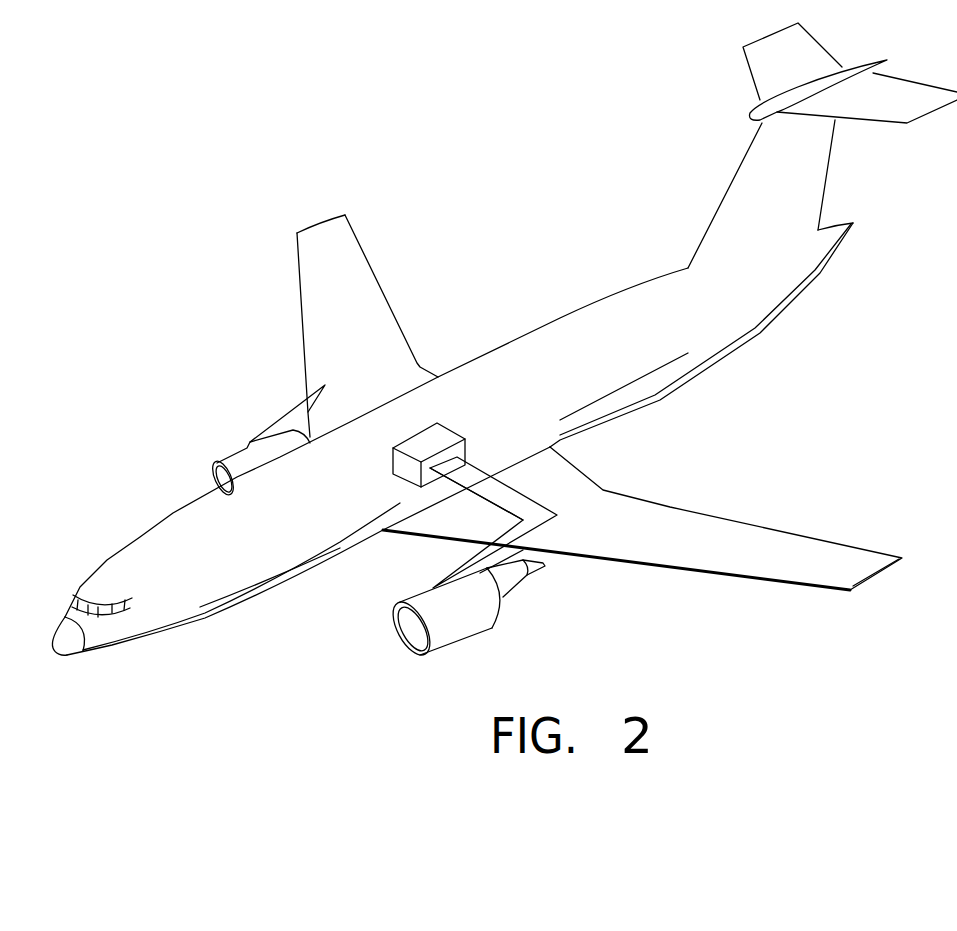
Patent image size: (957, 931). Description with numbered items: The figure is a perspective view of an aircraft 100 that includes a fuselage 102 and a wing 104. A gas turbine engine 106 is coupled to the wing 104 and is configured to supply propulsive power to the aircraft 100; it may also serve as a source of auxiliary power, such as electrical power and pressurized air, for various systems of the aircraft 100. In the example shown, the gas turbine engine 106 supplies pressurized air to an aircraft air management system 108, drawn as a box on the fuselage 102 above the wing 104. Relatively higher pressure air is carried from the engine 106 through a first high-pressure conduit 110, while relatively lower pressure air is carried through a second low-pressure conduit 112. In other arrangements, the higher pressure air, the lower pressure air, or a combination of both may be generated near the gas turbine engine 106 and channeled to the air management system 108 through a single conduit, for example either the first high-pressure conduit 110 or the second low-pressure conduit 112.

The aircraft 100 is at (398, 170).
The fuselage 102 is at (533, 342).
The wing 104 is at (693, 518).
The gas turbine engine 106 is at (443, 630).
The aircraft air management system 108 is at (395, 467).
The first high-pressure conduit 110 is at (547, 508).
The second low-pressure conduit 112 is at (492, 503).